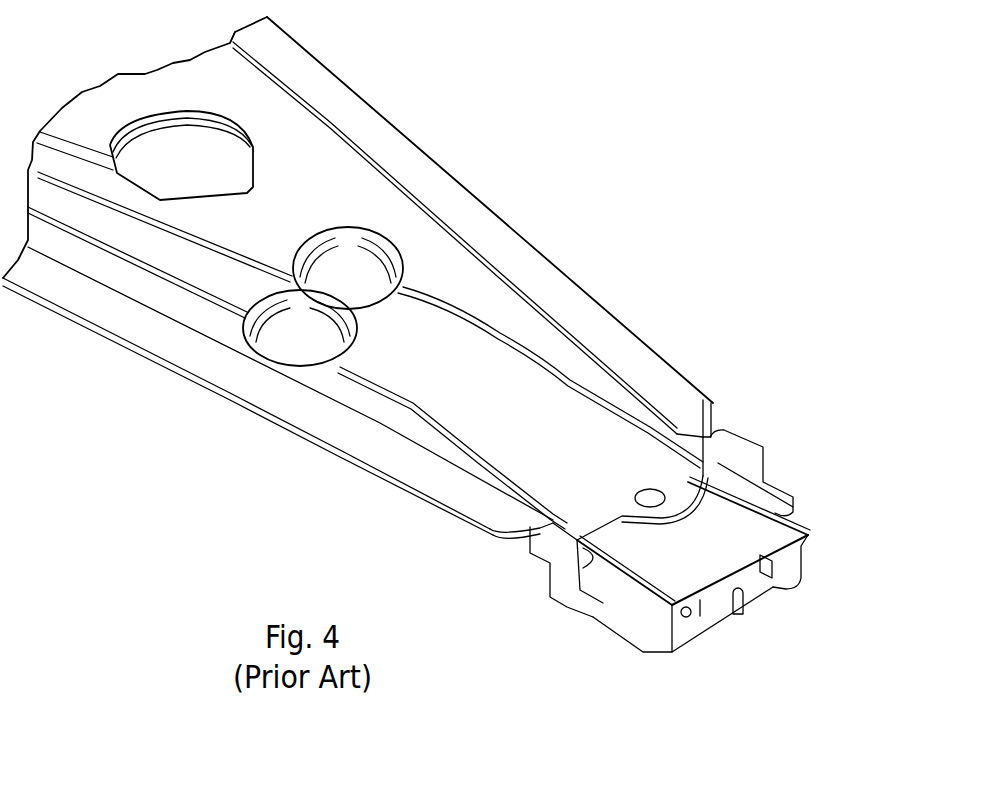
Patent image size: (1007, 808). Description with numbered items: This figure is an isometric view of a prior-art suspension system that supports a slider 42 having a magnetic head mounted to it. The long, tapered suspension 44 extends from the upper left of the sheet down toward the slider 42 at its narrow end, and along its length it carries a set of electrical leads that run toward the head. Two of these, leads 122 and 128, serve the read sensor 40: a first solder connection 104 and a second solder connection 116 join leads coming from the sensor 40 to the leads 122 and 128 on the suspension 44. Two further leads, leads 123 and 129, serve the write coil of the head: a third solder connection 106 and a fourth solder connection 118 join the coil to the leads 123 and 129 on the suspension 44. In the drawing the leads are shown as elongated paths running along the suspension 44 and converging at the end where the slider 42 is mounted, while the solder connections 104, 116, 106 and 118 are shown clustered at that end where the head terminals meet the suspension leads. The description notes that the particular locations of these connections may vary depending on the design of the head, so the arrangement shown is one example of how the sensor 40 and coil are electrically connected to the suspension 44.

The suspension 44 is at (530, 240).
The lead 123 is at (594, 388).
The lead 129 is at (502, 335).
The lead 128 is at (418, 403).
The lead 122 is at (398, 400).
The slider 42 is at (603, 631).
The third solder connection 106 is at (790, 545).
The fourth solder connection 118 is at (787, 590).
The first solder connection 104 is at (668, 647).
The second solder connection 116 is at (700, 623).
The sensor 40 is at (742, 625).